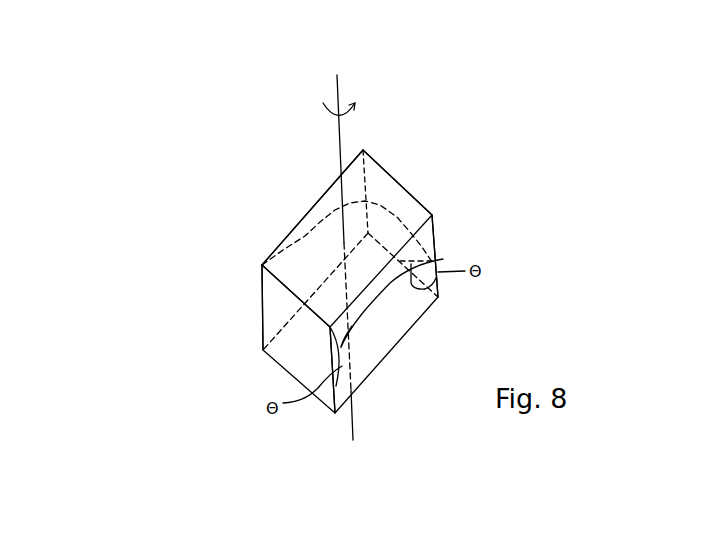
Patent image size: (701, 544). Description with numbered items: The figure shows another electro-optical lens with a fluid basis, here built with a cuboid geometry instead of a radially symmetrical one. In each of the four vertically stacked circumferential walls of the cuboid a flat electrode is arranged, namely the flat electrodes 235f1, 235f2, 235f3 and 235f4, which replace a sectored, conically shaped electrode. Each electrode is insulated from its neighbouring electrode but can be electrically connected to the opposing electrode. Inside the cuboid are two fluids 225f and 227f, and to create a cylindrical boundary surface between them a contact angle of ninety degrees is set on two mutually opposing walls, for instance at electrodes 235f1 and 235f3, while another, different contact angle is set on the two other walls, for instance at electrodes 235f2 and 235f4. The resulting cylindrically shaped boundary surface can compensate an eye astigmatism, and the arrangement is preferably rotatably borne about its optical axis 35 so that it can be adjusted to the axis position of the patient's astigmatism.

The optical axis 35 is at (337, 92).
The fluid 225f is at (373, 197).
The fluid 227f is at (393, 346).
The flat electrode 235f1 is at (422, 312).
The flat electrode 235f2 is at (432, 237).
The flat electrode 235f3 is at (263, 263).
The flat electrode 235f4 is at (282, 352).